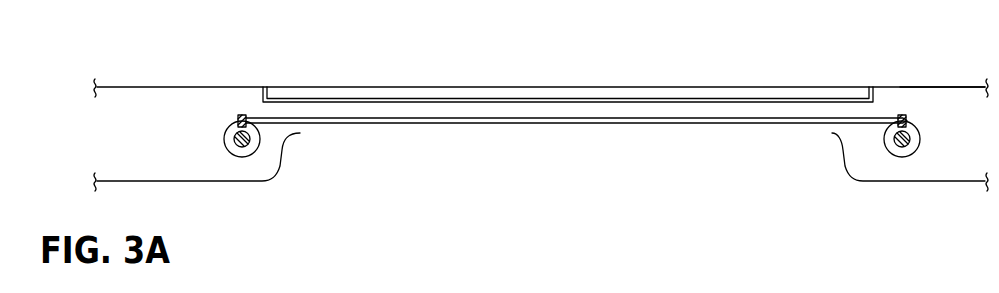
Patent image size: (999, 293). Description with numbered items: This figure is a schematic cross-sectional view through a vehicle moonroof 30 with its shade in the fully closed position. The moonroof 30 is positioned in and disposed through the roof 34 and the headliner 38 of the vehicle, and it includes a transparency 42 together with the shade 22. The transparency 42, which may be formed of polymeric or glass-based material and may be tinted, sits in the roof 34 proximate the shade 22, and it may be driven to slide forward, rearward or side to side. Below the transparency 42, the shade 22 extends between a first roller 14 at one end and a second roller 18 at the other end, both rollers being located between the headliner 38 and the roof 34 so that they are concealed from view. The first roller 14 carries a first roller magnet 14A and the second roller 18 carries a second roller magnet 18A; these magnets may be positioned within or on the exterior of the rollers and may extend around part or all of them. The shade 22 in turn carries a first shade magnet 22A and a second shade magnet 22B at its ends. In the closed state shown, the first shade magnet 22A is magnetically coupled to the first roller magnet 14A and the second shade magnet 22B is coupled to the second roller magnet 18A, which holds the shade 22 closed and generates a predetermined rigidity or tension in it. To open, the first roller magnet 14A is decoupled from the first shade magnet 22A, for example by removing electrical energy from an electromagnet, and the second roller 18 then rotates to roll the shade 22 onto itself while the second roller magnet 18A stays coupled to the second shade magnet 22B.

The first roller 14 is at (900, 157).
The first roller magnet 14A is at (908, 122).
The second roller 18 is at (239, 157).
The second roller magnet 18A is at (237, 123).
The shade 22 is at (598, 123).
The first shade magnet 22A is at (900, 115).
The second shade magnet 22B is at (241, 115).
The moonroof 30 is at (668, 85).
The roof 34 is at (921, 86).
The headliner 38 is at (908, 182).
The transparency 42 is at (482, 90).